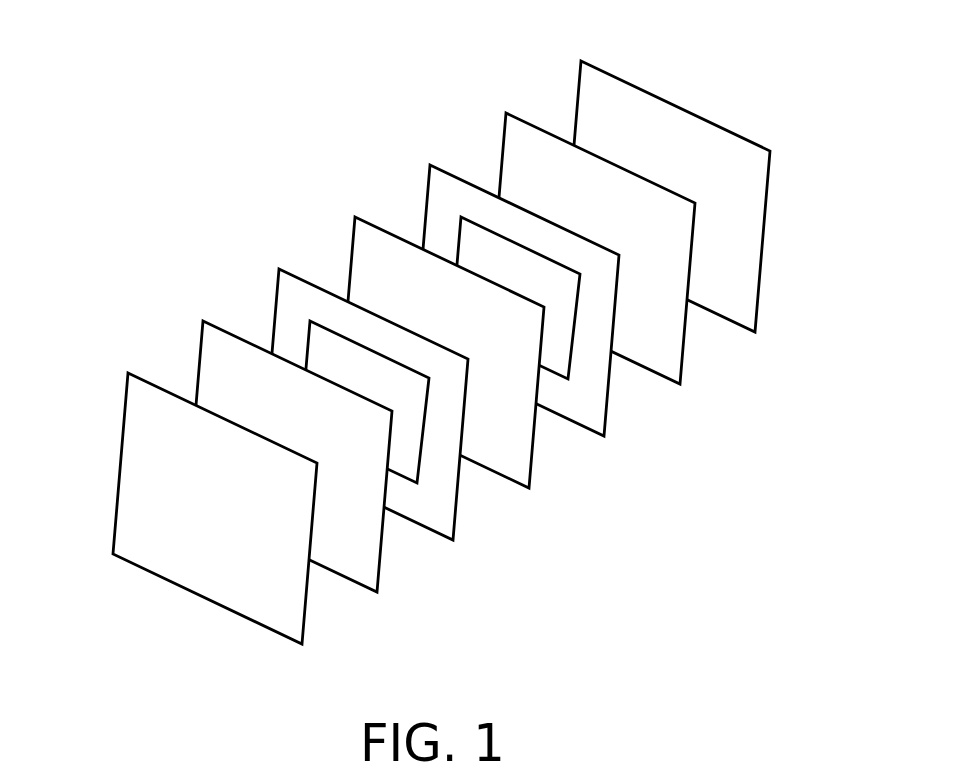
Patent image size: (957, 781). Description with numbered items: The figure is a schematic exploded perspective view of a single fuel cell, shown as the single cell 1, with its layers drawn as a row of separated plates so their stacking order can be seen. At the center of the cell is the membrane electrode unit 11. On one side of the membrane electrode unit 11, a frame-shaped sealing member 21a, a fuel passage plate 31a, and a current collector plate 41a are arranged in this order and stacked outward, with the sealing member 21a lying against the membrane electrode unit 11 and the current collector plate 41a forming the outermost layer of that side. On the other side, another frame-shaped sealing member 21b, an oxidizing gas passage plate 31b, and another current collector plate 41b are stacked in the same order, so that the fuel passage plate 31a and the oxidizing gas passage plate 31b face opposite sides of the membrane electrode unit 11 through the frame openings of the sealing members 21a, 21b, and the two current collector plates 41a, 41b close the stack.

The single cell 1 is at (303, 96).
The membrane electrode unit 11 is at (356, 205).
The frame-shaped sealing member 21a is at (289, 298).
The frame-shaped sealing member 21b is at (462, 193).
The fuel passage plate 31a is at (190, 334).
The oxidizing gas passage plate 31b is at (506, 100).
The current collector plate 41a is at (140, 402).
The current collector plate 41b is at (610, 88).